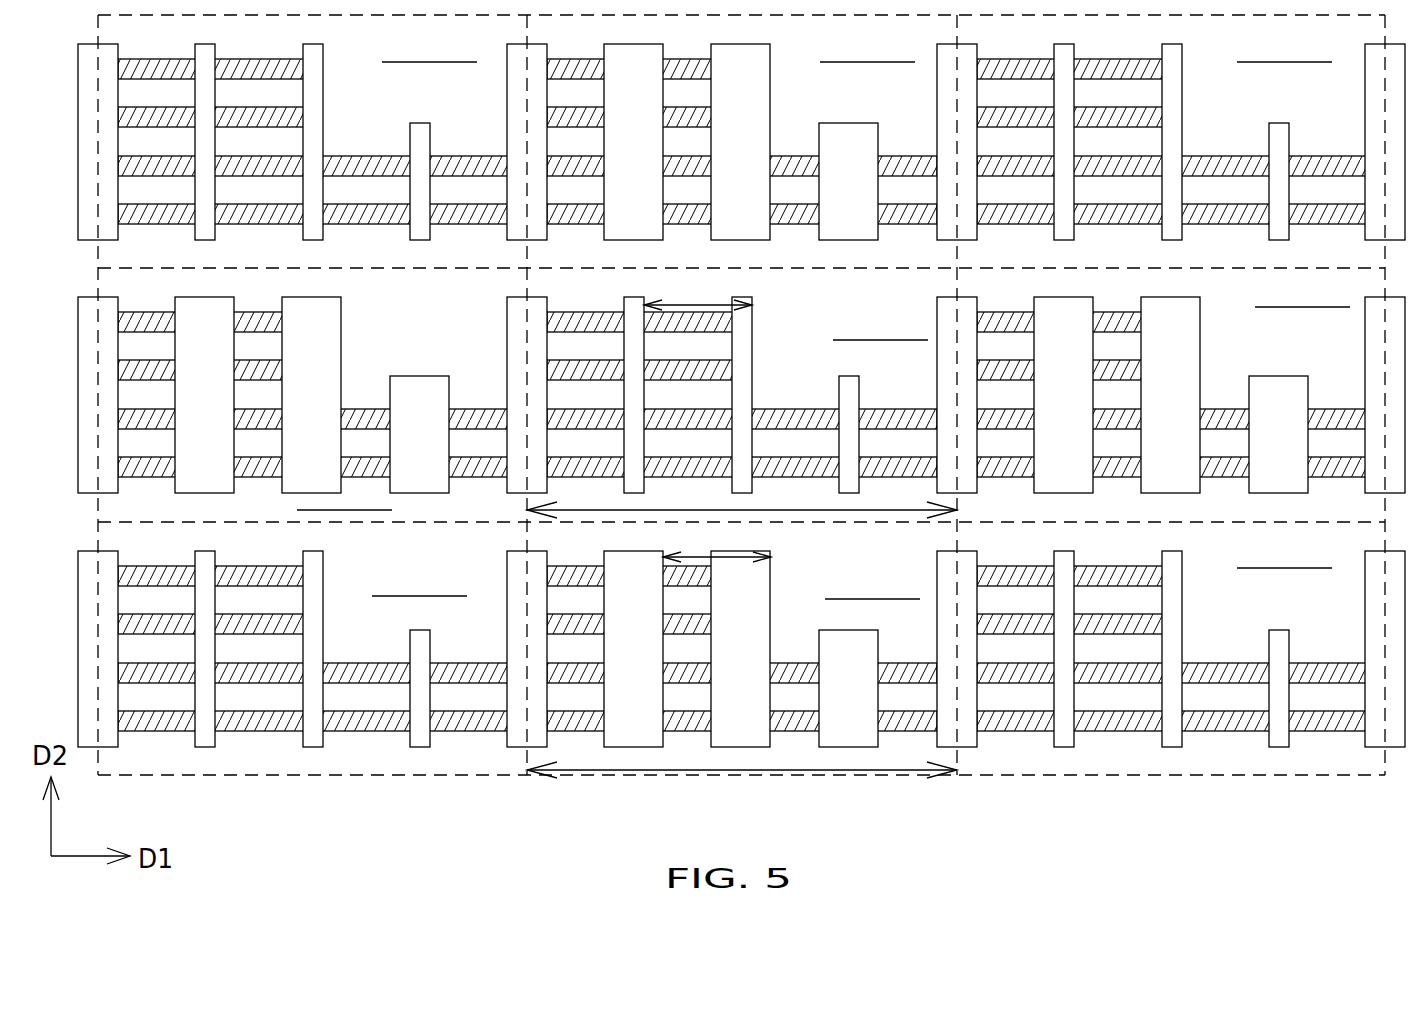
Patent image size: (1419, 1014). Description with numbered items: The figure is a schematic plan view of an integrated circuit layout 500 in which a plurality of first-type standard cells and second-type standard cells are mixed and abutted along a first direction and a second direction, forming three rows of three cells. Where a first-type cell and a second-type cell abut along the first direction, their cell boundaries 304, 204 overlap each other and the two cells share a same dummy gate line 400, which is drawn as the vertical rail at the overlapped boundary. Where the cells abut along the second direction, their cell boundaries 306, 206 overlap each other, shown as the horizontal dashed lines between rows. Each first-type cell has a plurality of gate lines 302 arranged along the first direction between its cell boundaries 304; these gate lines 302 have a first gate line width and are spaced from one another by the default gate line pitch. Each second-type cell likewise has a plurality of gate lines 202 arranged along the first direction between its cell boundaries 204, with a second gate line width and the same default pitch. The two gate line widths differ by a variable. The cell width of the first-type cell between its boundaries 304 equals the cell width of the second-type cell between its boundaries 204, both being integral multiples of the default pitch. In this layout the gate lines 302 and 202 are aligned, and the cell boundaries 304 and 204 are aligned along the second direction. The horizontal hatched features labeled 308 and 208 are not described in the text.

The gate line 202 is at (637, 551).
The cell boundary 204 is at (527, 295).
The cell boundary 206 is at (887, 271).
The fin structure 208 is at (1232, 410).
The gate line 302 is at (633, 297).
The cell boundary 304 is at (958, 297).
The cell boundary 306 is at (925, 523).
The fin structure 308 is at (902, 410).
The dummy gate line 400 is at (519, 330).
The integrated circuit layout 500 is at (1183, 780).